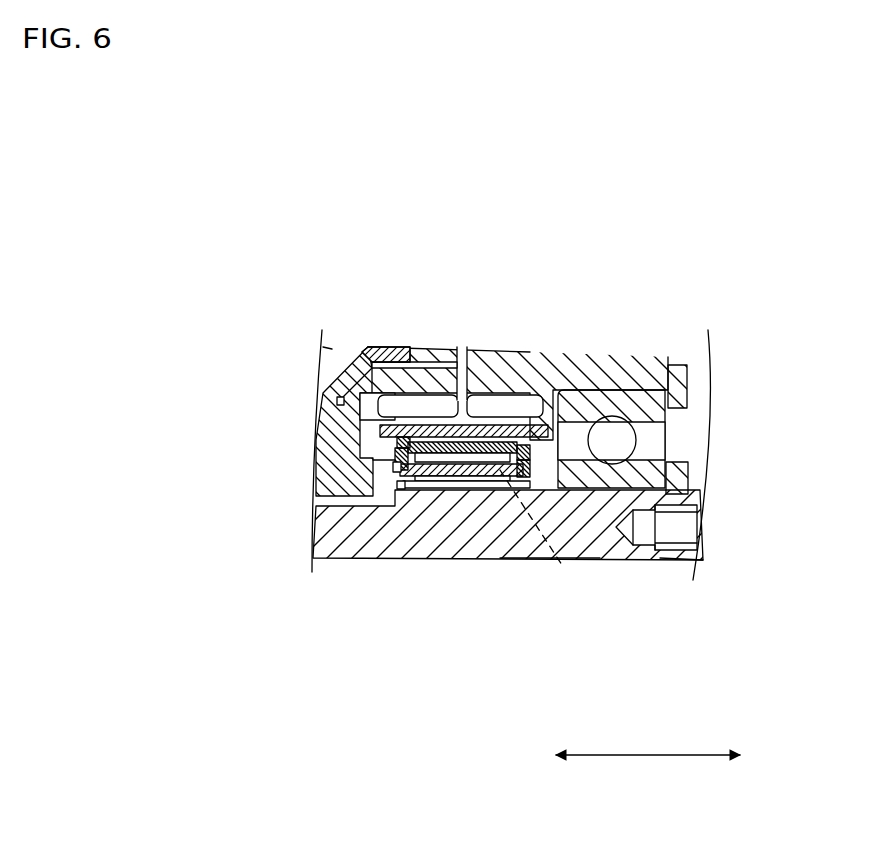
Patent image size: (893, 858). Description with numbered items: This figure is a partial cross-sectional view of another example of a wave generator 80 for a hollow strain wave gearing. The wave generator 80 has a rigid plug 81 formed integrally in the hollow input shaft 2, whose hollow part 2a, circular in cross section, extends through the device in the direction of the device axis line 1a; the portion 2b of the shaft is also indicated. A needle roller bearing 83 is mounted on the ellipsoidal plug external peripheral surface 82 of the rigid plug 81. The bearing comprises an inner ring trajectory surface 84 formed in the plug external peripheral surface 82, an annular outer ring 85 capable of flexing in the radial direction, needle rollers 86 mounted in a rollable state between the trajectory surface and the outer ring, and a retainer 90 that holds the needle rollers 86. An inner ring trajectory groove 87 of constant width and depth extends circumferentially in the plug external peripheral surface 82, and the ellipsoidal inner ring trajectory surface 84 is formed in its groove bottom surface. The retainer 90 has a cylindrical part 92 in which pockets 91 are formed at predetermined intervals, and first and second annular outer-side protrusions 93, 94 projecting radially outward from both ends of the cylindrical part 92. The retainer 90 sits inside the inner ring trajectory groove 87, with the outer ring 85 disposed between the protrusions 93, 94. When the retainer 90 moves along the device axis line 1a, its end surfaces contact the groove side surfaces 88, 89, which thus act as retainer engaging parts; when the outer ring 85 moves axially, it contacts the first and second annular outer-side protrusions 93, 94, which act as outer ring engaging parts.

The hollow input shaft 2 is at (614, 567).
The hollow part 2a is at (630, 672).
The housing side portion 2b is at (677, 553).
The device axis line 1a is at (640, 755).
The wave generator 80 is at (541, 426).
The rigid plug 81 is at (461, 506).
The plug external peripheral surface 82 is at (398, 452).
The needle roller bearing 83 is at (478, 434).
The inner ring trajectory surface 84 is at (432, 482).
The annular outer ring 85 is at (458, 445).
The needle rollers 86 is at (432, 452).
The inner ring trajectory groove 87 is at (398, 492).
The groove side surface 88 is at (530, 468).
The groove side surface 89 is at (396, 468).
The retainer 90 is at (372, 368).
The pockets 91 is at (540, 544).
The cylindrical part 92 is at (490, 488).
The first annular outer-side protrusion 93 is at (528, 452).
The second annular outer-side protrusion 94 is at (400, 443).